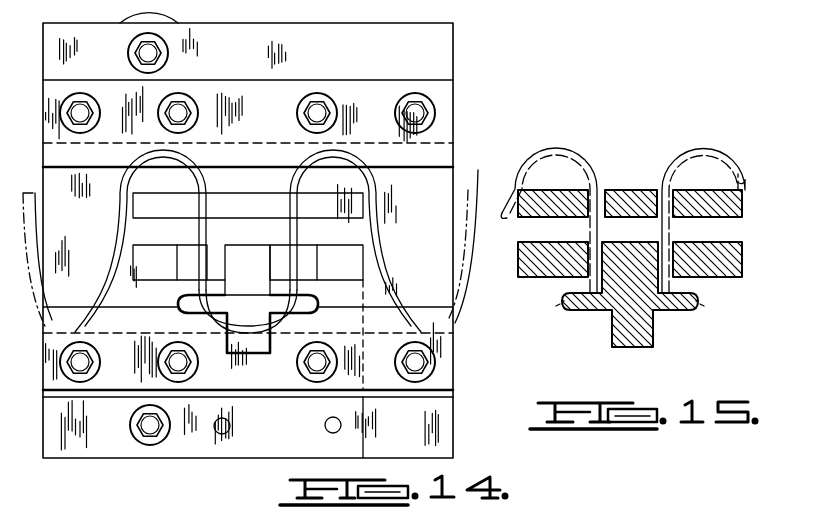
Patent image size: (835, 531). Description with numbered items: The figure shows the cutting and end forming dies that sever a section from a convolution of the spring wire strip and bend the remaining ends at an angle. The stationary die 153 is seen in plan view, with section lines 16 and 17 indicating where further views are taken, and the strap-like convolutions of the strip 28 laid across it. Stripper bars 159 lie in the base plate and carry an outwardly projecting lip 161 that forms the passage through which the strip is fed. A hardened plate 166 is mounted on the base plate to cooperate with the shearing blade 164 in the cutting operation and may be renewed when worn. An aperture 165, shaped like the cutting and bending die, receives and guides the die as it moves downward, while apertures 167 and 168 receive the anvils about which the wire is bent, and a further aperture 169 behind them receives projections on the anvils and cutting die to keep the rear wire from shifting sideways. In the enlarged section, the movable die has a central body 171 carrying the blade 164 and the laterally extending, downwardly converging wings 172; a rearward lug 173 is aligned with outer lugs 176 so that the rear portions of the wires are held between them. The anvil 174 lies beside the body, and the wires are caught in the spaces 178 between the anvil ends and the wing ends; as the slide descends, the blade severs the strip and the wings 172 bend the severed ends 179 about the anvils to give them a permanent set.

In FIG. 14, the stationary cutting and forming die 153 is at (451, 53).
In FIG. 14, the stripper bars 159 is at (446, 82).
In FIG. 14, the aperture 169 is at (258, 193).
In FIG. 14, the aperture 167 is at (133, 257).
In FIG. 14, the aperture 168 is at (355, 250).
In FIG. 14, the aperture 165 is at (255, 248).
In FIG. 14, the outwardly projecting lip 161 is at (233, 344).
In FIG. 14, the hardened plate 166 is at (358, 296).
In FIG. 14, the strap 28 is at (254, 237).
In FIG. 14, the section line 16- 16 is at (151, 144).
In FIG. 14, the section line 17- 17 is at (218, 52).
In FIG. 15, the lugs 176 is at (550, 192).
In FIG. 15, the lug 173 is at (628, 190).
In FIG. 15, the anvil 174 is at (540, 278).
In FIG. 15, the spaces 178 is at (720, 278).
In FIG. 15, the body 171 is at (622, 282).
In FIG. 15, the shearing blade 164 is at (636, 348).
In FIG. 15, the wings 172 is at (564, 302).
In FIG. 15, the severed ends 179 is at (556, 306).